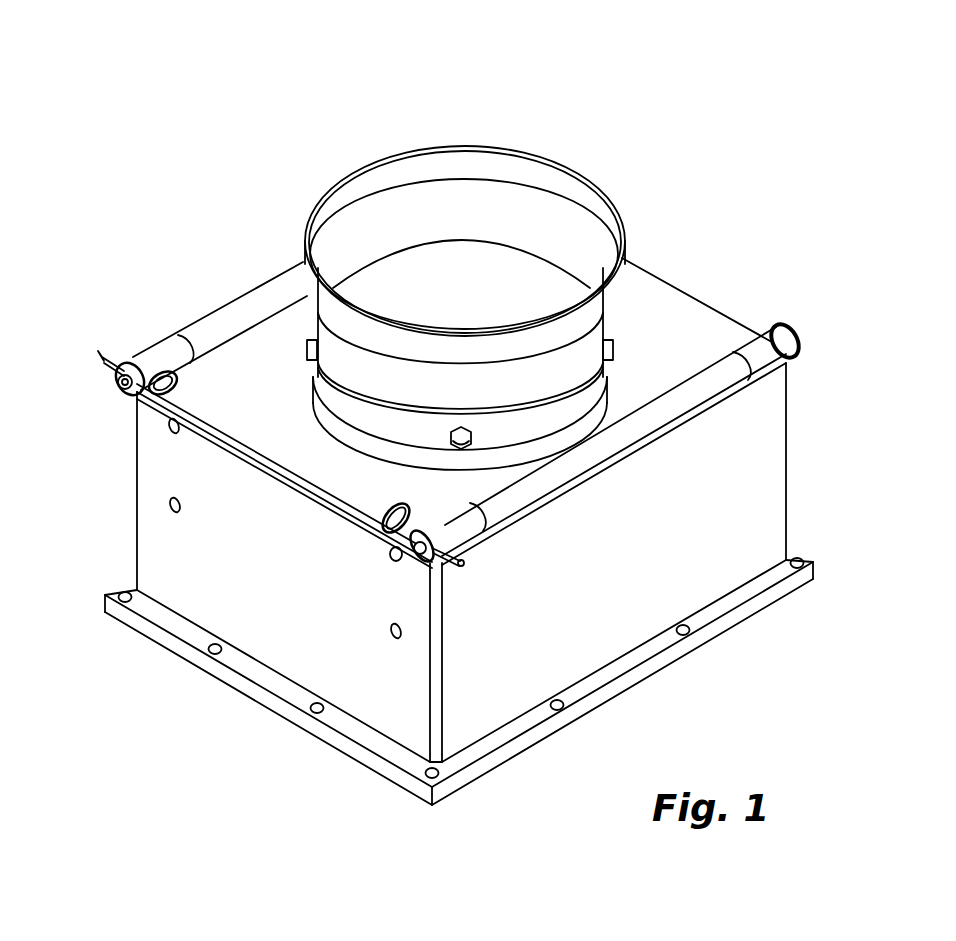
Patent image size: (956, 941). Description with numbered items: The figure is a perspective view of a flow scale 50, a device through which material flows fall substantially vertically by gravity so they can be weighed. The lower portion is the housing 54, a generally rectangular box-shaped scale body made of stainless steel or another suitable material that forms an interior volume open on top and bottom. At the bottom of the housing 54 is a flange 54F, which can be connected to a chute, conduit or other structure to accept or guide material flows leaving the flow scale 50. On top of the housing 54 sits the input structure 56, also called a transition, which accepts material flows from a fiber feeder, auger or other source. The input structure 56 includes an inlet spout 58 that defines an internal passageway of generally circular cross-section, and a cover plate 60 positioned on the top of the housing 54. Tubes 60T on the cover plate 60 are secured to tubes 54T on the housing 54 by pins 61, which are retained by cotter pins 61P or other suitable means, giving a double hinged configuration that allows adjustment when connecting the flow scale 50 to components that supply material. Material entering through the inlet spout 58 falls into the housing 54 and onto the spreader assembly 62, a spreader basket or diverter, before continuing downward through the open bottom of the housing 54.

The flow scale 50 is at (756, 220).
The housing 54 is at (752, 460).
The tubes 54T is at (275, 297).
The flange 54F is at (797, 556).
The input structure 56 is at (395, 176).
The inlet spout 58 is at (548, 170).
The cover plate 60 is at (678, 302).
The tubes 60T is at (168, 348).
The pins 61 is at (124, 395).
The cotter pins 61P is at (110, 357).
The spreader assembly 62 is at (478, 220).